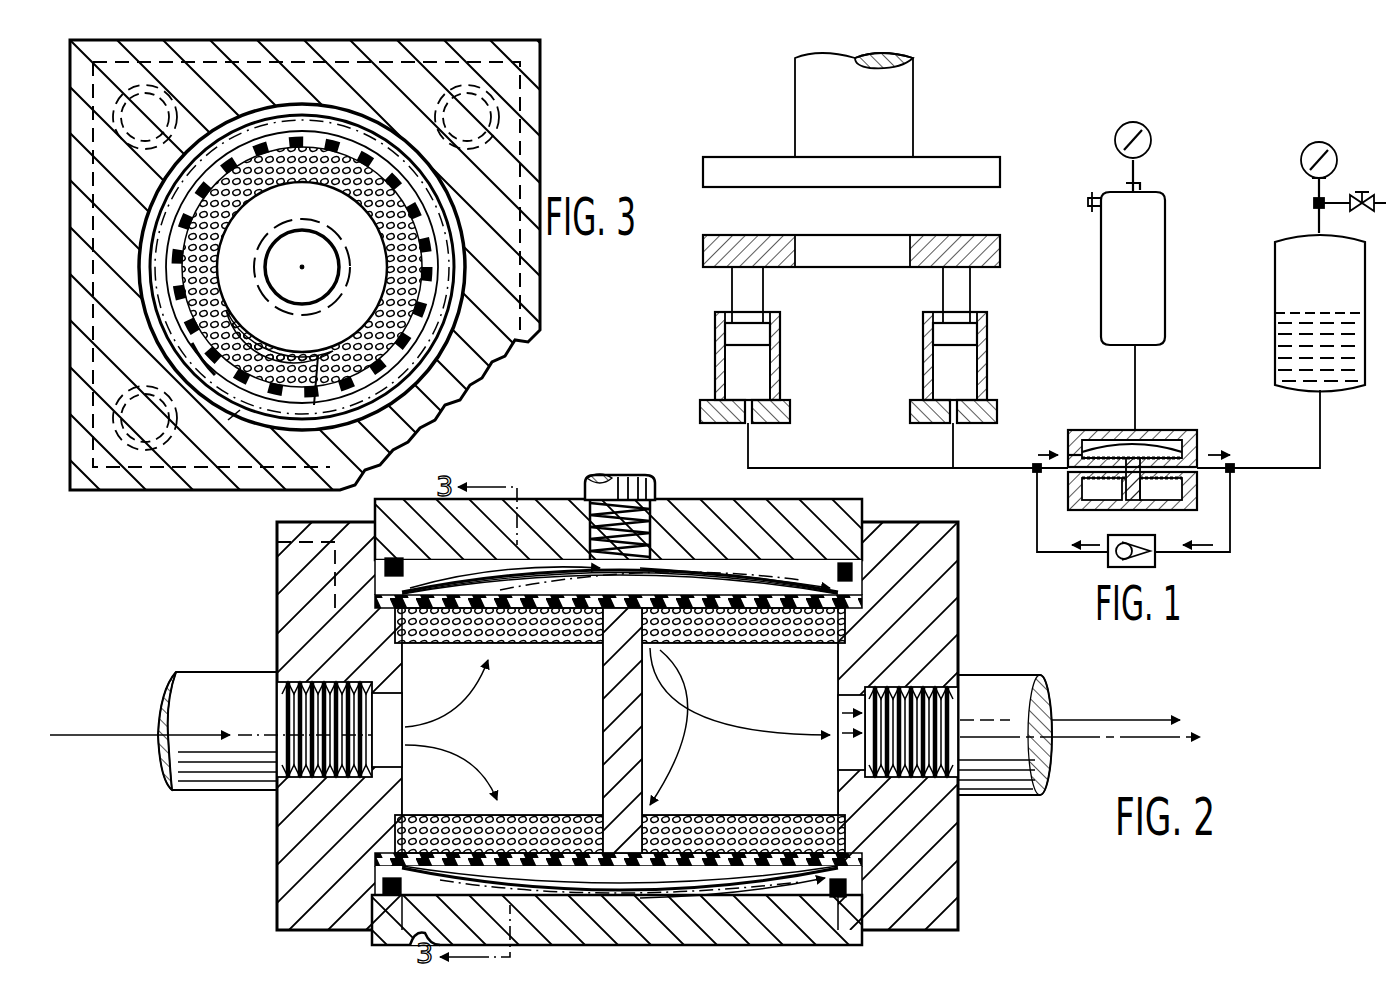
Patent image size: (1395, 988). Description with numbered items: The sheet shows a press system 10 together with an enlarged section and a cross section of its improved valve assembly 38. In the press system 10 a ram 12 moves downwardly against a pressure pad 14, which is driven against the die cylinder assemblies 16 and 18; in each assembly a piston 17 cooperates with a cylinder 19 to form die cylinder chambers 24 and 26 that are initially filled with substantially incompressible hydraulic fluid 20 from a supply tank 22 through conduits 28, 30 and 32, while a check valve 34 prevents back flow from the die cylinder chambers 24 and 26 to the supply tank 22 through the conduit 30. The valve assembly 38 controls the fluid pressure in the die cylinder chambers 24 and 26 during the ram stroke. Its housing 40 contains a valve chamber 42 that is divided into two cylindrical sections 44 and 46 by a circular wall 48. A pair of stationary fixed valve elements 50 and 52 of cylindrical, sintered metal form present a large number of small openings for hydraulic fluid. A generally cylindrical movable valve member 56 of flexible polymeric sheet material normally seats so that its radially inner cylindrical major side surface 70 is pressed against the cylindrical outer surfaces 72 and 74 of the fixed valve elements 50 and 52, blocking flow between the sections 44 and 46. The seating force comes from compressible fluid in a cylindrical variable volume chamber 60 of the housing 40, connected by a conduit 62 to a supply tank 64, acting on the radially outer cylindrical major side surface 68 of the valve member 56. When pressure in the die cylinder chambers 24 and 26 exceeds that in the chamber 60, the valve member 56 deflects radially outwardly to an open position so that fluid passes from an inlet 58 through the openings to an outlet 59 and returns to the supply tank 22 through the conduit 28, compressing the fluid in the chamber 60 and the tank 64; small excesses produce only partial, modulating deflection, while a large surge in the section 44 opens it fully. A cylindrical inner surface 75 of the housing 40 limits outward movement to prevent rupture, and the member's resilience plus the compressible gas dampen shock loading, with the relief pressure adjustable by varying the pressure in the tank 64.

In FIG. 1, the press system 10 is at (1282, 113).
In FIG. 1, the ram 12 is at (903, 102).
In FIG. 1, the pressure pad 14 is at (995, 222).
In FIG. 1, the die cylinder assembly 16 is at (864, 345).
In FIG. 1, the piston 17 is at (750, 335).
In FIG. 1, the die cylinder assembly 18 is at (952, 333).
In FIG. 1, the cylinder 19 is at (780, 393).
In FIG. 1, the hydraulic fluid 20 is at (1280, 334).
In FIG. 1, the supply tank 22 is at (1278, 268).
In FIG. 1, the die cylinder chamber 24 is at (755, 370).
In FIG. 1, the die cylinder chamber 26 is at (950, 370).
In FIG. 1, the conduit 28 is at (1300, 478).
In FIG. 2, the conduit 28 is at (1040, 695).
In FIG. 1, the conduit 30 is at (1210, 556).
In FIG. 1, the conduit 32 is at (1020, 465).
In FIG. 2, the conduit 32 is at (178, 690).
In FIG. 1, the check valve 34 is at (1108, 565).
In FIG. 3, the valve assembly 38 is at (517, 265).
In FIG. 1, the valve assembly 38 is at (1165, 458).
In FIG. 2, the valve assembly 38 is at (685, 709).
In FIG. 3, the housing 40 is at (108, 155).
In FIG. 1, the housing 40 is at (1200, 441).
In FIG. 2, the housing 40 is at (293, 571).
In FIG. 1, the valve chamber 42 is at (1082, 450).
In FIG. 2, the valve chamber 42 is at (392, 778).
In FIG. 1, the cylindrical section 44 is at (1085, 490).
In FIG. 2, the cylindrical section 44 is at (530, 735).
In FIG. 1, the cylindrical section 46 is at (1150, 508).
In FIG. 2, the cylindrical section 46 is at (730, 735).
In FIG. 2, the circular wall 48 is at (606, 758).
In FIG. 3, the fixed valve element 50 is at (400, 245).
In FIG. 2, the fixed valve element 50 is at (521, 651).
In FIG. 2, the fixed valve element 52 is at (733, 645).
In FIG. 3, the movable valve member 56 is at (430, 345).
In FIG. 1, the movable valve member 56 is at (1150, 458).
In FIG. 2, the movable valve member 56 is at (742, 592).
In FIG. 2, the inlet 58 is at (447, 702).
In FIG. 2, the outlet 59 is at (842, 742).
In FIG. 3, the variable volume chamber 60 is at (462, 283).
In FIG. 1, the variable volume chamber 60 is at (1128, 456).
In FIG. 2, the variable volume chamber 60 is at (505, 567).
In FIG. 1, the conduit 62 is at (1137, 370).
In FIG. 2, the conduit 62 is at (650, 506).
In FIG. 1, the supply tank 64 is at (1157, 258).
In FIG. 3, the radially outer cylindrical major side surface 68 is at (232, 352).
In FIG. 2, the radially outer cylindrical major side surface 68 is at (790, 590).
In FIG. 3, the radially inner cylindrical major side surface 70 is at (540, 332).
In FIG. 2, the radially inner cylindrical major side surface 70 is at (492, 592).
In FIG. 3, the cylindrical outer surface 72 is at (177, 272).
In FIG. 2, the cylindrical outer surface 72 is at (489, 648).
In FIG. 2, the cylindrical outer surface 74 is at (767, 632).
In FIG. 3, the cylindrical inner surface 75 is at (233, 418).
In FIG. 2, the cylindrical inner surface 75 is at (372, 885).